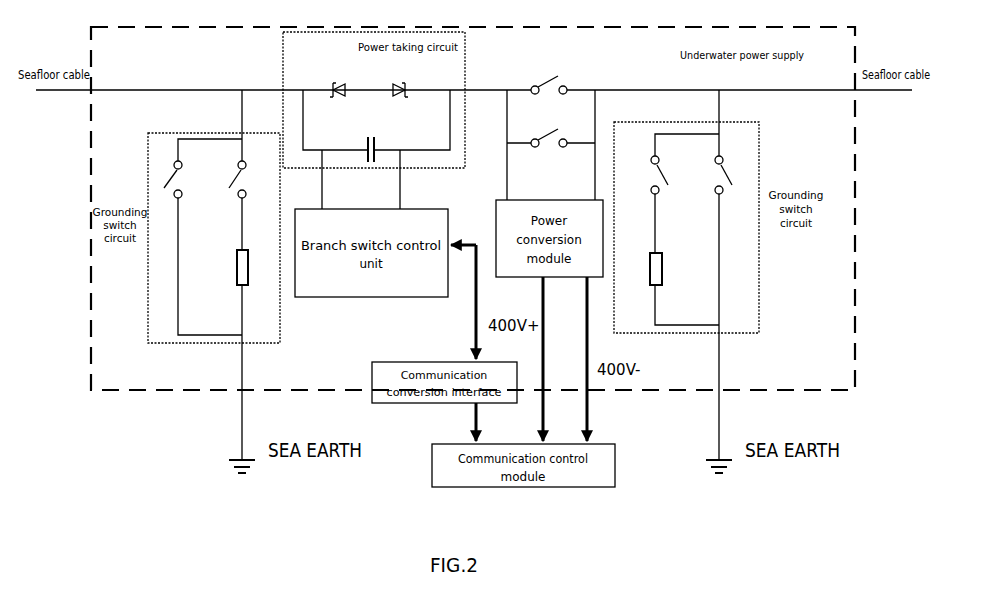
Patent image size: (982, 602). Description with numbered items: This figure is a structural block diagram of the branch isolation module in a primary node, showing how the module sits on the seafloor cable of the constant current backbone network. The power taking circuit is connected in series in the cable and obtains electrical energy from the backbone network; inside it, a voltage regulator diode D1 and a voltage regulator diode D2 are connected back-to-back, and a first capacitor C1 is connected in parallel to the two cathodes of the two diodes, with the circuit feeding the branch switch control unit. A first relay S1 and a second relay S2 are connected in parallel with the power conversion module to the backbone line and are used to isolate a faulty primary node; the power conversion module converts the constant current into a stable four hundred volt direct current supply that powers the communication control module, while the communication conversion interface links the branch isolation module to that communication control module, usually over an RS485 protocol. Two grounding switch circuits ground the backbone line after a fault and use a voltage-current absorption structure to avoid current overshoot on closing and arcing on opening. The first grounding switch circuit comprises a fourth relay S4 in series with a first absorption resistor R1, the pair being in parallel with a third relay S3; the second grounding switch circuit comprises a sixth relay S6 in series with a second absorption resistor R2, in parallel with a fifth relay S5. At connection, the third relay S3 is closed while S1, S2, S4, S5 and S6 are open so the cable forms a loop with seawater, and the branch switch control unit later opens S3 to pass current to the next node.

The voltage regulator diode D1 is at (336, 80).
The voltage regulator diode D2 is at (400, 80).
The first capacitor C1 is at (371, 165).
The first relay S1 is at (549, 97).
The second relay S2 is at (549, 150).
The third relay S3 is at (707, 175).
The fourth relay S4 is at (643, 175).
The fifth relay S5 is at (186, 179).
The sixth relay S6 is at (251, 179).
The first absorption resistor R1 is at (639, 269).
The second absorption resistor R2 is at (226, 267).